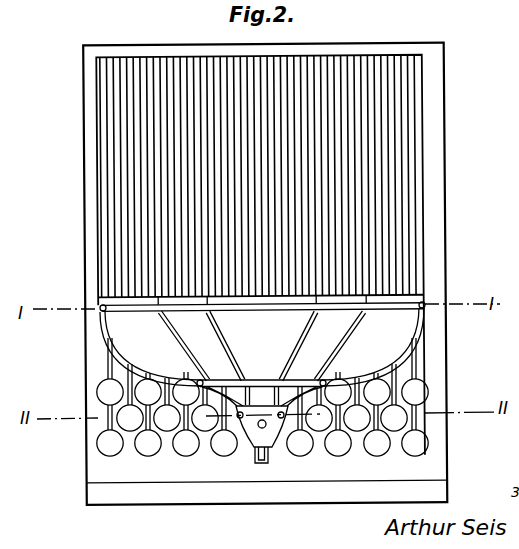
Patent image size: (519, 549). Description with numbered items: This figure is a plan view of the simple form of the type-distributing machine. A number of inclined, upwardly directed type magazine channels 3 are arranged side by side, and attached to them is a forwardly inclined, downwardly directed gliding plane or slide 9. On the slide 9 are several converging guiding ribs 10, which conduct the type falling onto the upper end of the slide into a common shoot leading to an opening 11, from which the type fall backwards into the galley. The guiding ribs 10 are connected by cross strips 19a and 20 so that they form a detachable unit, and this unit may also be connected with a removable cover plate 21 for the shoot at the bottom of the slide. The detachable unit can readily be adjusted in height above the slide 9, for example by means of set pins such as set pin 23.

The type magazine channels 3 is at (146, 226).
The slide 9 is at (261, 322).
The guiding ribs 10 is at (172, 331).
The opening 11 is at (262, 463).
The cross strip 19a is at (200, 378).
The cross strip 20 is at (272, 311).
The cover plate 21 is at (256, 428).
The set pin 23 is at (425, 303).